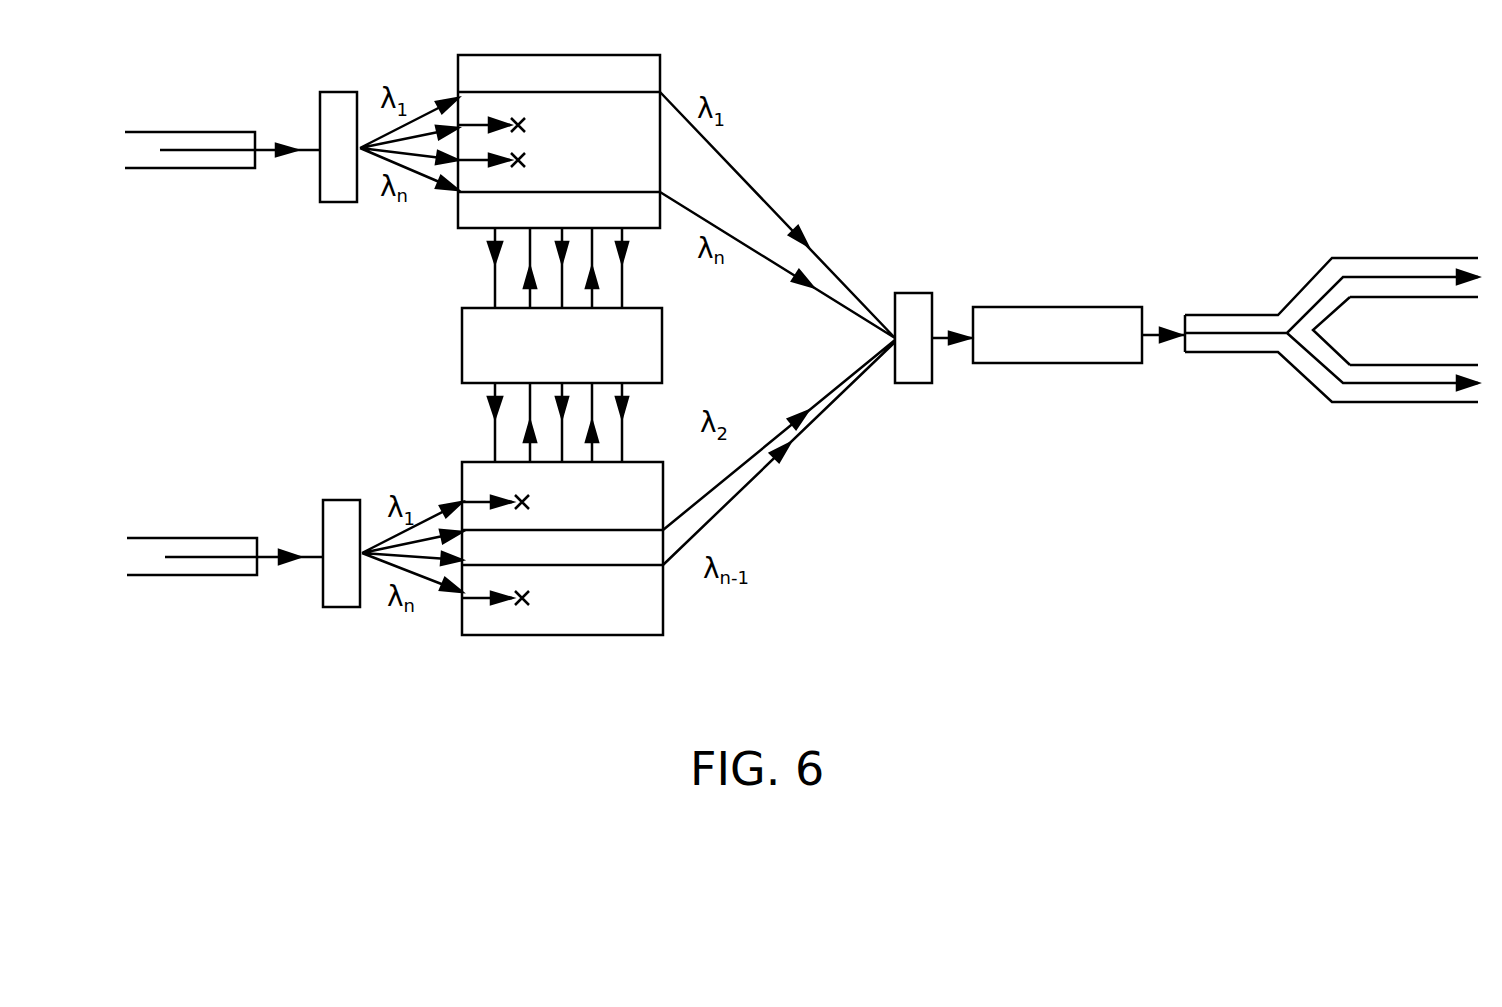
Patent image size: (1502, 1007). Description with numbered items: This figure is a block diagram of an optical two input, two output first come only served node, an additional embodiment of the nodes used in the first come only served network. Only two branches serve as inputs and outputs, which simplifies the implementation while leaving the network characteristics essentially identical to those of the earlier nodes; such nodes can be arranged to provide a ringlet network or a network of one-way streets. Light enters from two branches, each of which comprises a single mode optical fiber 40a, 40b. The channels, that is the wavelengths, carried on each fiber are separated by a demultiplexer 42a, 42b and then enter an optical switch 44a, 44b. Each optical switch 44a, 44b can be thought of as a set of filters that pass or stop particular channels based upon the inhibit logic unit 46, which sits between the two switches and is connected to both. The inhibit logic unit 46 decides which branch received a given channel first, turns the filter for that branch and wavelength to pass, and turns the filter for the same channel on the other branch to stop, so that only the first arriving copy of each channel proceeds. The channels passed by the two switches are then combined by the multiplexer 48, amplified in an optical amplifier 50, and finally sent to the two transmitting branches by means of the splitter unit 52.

The single mode optical fiber 40a is at (148, 132).
The single mode optical fiber 40b is at (150, 538).
The demultiplexer 42a is at (328, 92).
The demultiplexer 42b is at (340, 607).
The optical switch 44a is at (530, 55).
The optical switch 44b is at (572, 635).
The inhibit logic unit 46 is at (662, 328).
The multiplexer 48 is at (908, 293).
The optical amplifier 50 is at (1020, 307).
The splitter unit 52 is at (1360, 258).